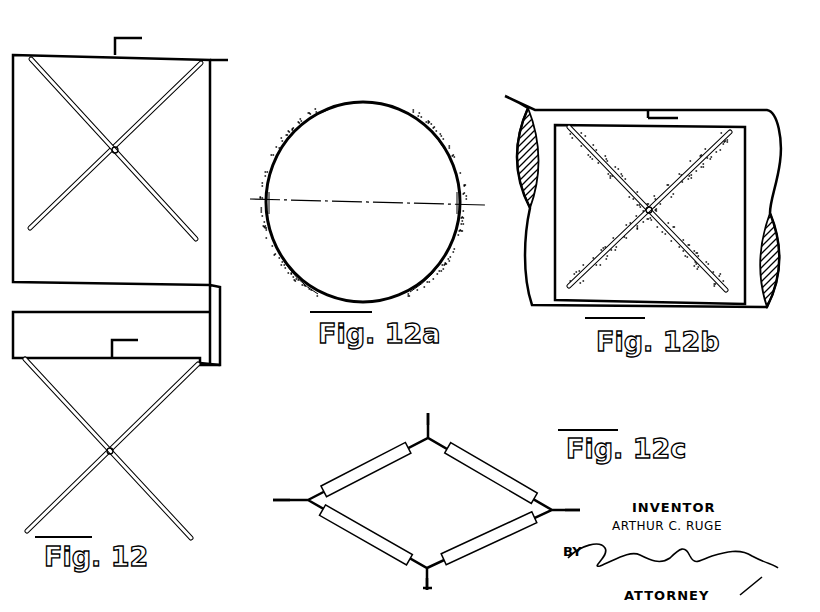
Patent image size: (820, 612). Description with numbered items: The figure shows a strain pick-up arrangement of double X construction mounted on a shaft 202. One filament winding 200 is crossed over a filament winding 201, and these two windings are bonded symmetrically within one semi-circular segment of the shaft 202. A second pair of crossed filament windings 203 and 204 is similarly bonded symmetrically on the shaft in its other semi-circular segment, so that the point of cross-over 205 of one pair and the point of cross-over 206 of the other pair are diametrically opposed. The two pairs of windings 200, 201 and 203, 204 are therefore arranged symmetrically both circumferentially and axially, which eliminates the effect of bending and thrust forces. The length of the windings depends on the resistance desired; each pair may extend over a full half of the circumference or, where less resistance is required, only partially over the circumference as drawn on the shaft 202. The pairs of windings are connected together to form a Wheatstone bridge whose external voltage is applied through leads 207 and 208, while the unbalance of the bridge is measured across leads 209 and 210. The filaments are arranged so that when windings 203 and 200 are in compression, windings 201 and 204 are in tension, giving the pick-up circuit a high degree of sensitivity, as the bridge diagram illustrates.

In FIG. 12, the filament winding 200 is at (158, 190).
In FIG. 12A, the filament winding 200 is at (280, 262).
In FIG. 12C, the filament winding 200 is at (482, 462).
In FIG. 12, the filament winding 201 is at (151, 113).
In FIG. 12A, the filament winding 201 is at (295, 127).
In FIG. 12C, the filament winding 201 is at (398, 447).
In FIG. 12A, the shaft 202 is at (388, 120).
In FIG. 12B, the shaft 202 is at (643, 201).
In FIG. 12, the filament winding 203 is at (135, 478).
In FIG. 12A, the filament winding 203 is at (448, 158).
In FIG. 12B, the filament winding 203 is at (606, 168).
In FIG. 12C, the filament winding 203 is at (364, 538).
In FIG. 12, the filament winding 204 is at (153, 412).
In FIG. 12A, the filament winding 204 is at (453, 250).
In FIG. 12B, the filament winding 204 is at (690, 170).
In FIG. 12C, the filament winding 204 is at (487, 544).
In FIG. 12, the point of cross-over 205 is at (114, 451).
In FIG. 12A, the point of cross-over 205 is at (462, 203).
In FIG. 12B, the point of cross-over 205 is at (653, 209).
In FIG. 12, the point of cross-over 206 is at (118, 149).
In FIG. 12A, the point of cross-over 206 is at (265, 200).
In FIG. 12, the external voltage lead 207 is at (220, 366).
In FIG. 12C, the external voltage lead 207 is at (570, 508).
In FIG. 12, the external voltage lead 208 is at (228, 60).
In FIG. 12C, the external voltage lead 208 is at (300, 503).
In FIG. 12, the lead 209 is at (143, 38).
In FIG. 12C, the lead 209 is at (432, 420).
In FIG. 12, the lead 210 is at (130, 340).
In FIG. 12B, the lead 210 is at (656, 110).
In FIG. 12C, the lead 210 is at (431, 588).